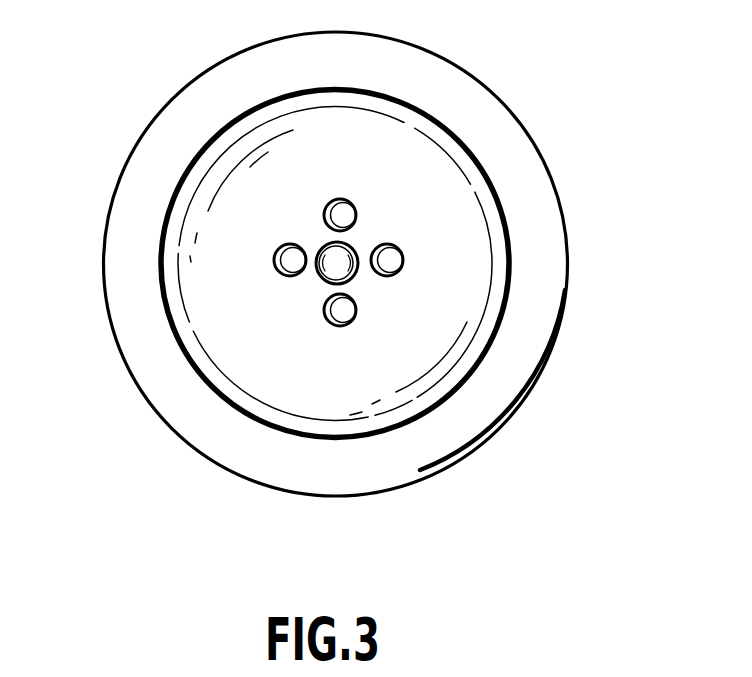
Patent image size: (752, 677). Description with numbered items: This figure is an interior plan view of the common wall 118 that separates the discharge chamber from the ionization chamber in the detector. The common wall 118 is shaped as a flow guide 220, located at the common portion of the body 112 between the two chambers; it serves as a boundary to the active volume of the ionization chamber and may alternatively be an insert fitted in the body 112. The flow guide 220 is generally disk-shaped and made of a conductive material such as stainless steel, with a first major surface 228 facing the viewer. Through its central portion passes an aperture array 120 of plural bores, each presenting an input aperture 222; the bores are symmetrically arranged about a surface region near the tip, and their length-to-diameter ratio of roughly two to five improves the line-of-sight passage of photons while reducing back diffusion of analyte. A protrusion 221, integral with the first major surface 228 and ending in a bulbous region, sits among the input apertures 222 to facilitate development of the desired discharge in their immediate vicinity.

The body 112 is at (520, 118).
The common wall 118 is at (488, 295).
The aperture array 120 is at (338, 361).
The flow guide 220 is at (120, 470).
The protrusion 221 is at (320, 249).
The input apertures 222 is at (391, 244).
The first major surface 228 is at (358, 159).